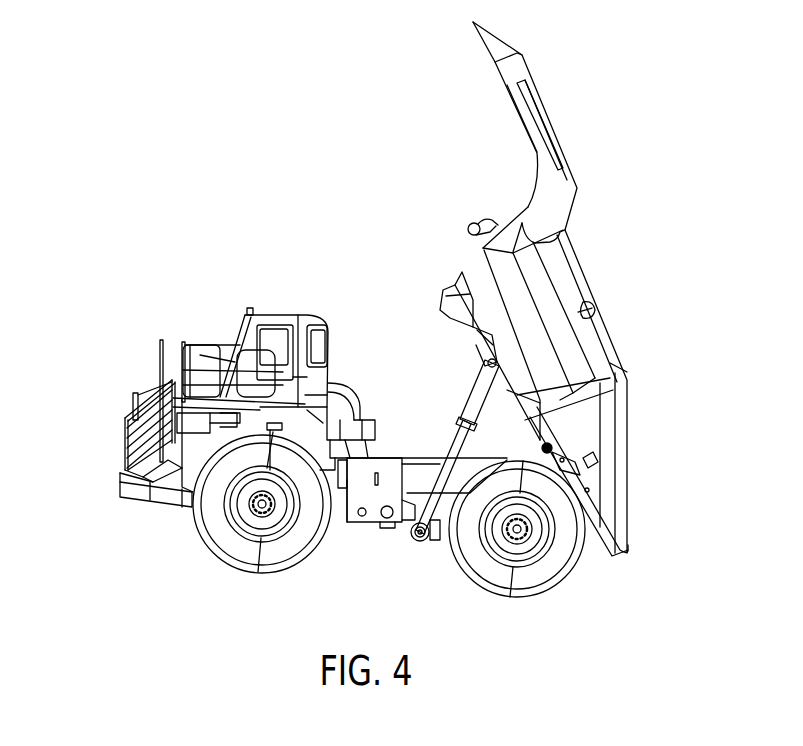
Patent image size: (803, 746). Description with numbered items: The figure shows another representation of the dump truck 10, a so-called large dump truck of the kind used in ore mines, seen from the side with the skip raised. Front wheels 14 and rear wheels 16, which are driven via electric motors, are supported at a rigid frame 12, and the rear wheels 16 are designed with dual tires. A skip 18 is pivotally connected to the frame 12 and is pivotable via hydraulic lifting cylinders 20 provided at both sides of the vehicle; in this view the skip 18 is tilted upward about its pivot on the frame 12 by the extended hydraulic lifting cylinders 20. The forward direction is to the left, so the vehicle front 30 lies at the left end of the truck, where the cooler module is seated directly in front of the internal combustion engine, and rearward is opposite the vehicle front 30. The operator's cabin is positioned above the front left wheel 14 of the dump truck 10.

The dump truck 10 is at (408, 162).
The frame 12 is at (428, 473).
The front wheels 14 is at (287, 547).
The rear wheels 16 is at (547, 570).
The skip 18 is at (595, 293).
The hydraulic lifting cylinders 20 is at (477, 397).
The vehicle front 30 is at (103, 461).